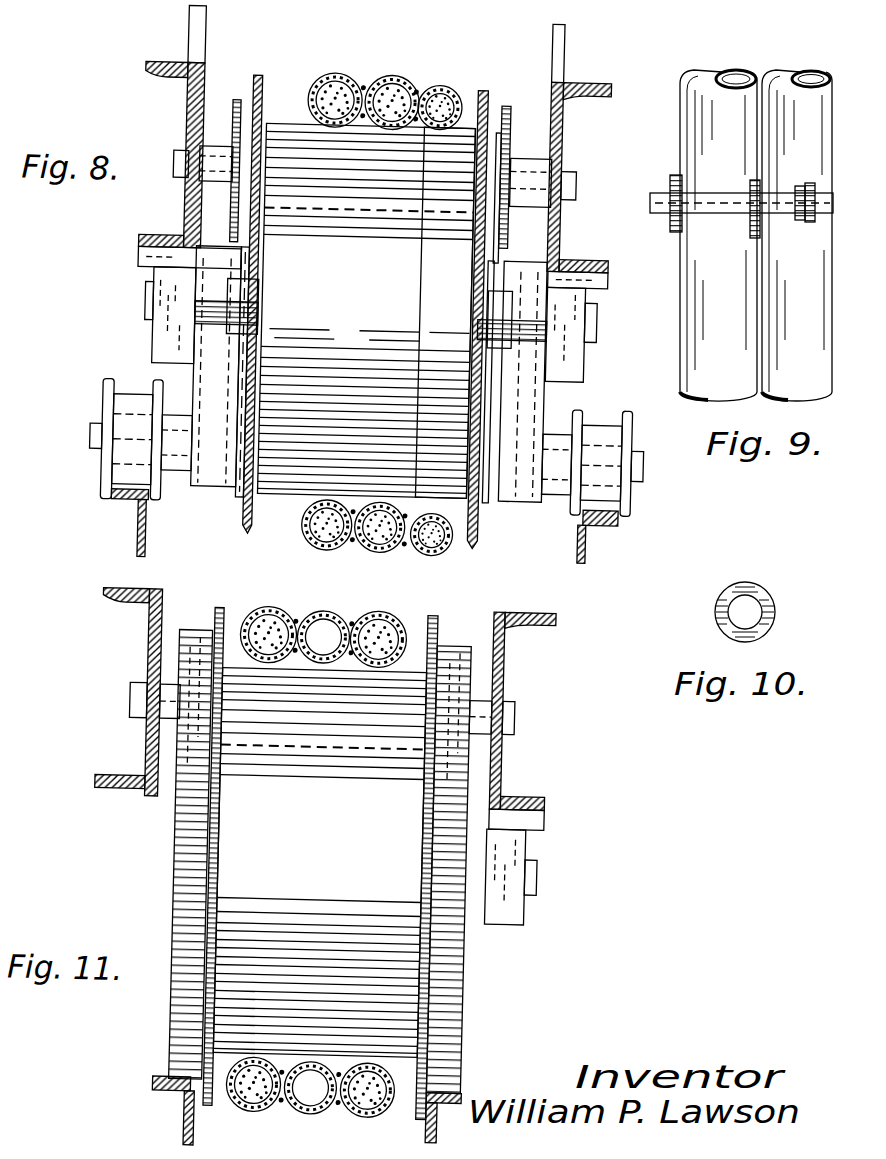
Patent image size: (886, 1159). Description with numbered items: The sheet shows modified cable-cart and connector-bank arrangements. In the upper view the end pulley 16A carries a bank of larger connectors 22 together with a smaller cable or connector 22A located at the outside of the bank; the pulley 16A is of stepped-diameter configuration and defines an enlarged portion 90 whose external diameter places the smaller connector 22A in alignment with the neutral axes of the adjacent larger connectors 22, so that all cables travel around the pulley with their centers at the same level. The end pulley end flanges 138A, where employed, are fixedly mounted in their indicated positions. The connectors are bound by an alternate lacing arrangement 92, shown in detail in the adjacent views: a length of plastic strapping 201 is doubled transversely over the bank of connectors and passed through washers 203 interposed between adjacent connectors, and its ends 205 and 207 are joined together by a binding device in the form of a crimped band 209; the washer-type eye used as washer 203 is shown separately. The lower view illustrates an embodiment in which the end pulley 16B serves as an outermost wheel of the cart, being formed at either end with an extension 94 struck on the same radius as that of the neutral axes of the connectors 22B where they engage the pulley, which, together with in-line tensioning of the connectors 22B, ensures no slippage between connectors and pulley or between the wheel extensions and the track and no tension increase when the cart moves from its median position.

In FIG. 8, the end pulley 16A is at (290, 456).
In FIG. 11, the end pulley 16B is at (400, 1000).
In FIG. 8, the connectors 22 is at (318, 530).
In FIG. 8, the smaller cable or connector 22A is at (438, 546).
In FIG. 11, the connectors 22B is at (290, 602).
In FIG. 8, the enlarged portion 90 is at (450, 470).
In FIG. 8, the lacing arrangement 92 is at (408, 64).
In FIG. 9, the lacing arrangement 92 is at (707, 190).
In FIG. 11, the extension 94 is at (448, 957).
In FIG. 8, the end pulley end flanges 138A is at (486, 96).
In FIG. 9, the plastic strapping 201 is at (734, 194).
In FIG. 9, the washers 203 is at (671, 227).
In FIG. 10, the washers 203 is at (757, 594).
In FIG. 9, the end of strapping 205 is at (814, 196).
In FIG. 9, the end of strapping 207 is at (814, 226).
In FIG. 9, the crimped band 209 is at (798, 192).